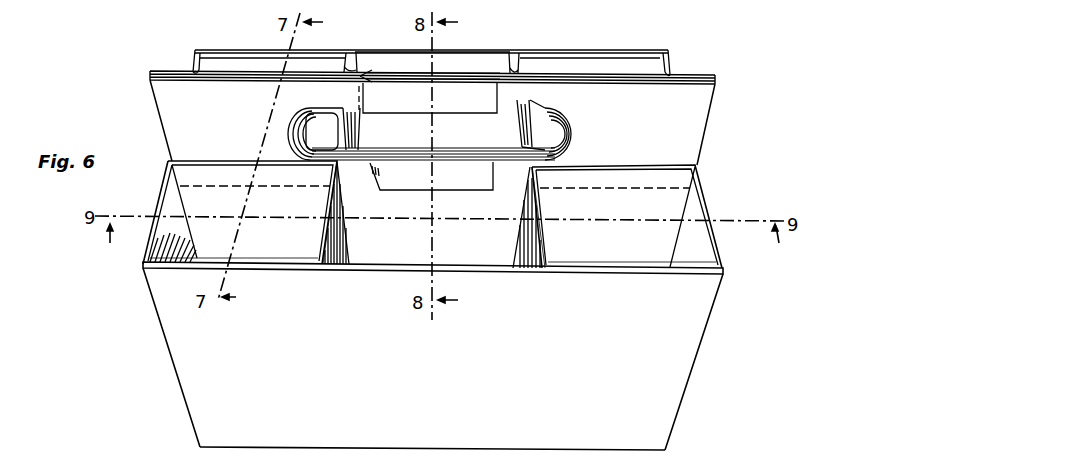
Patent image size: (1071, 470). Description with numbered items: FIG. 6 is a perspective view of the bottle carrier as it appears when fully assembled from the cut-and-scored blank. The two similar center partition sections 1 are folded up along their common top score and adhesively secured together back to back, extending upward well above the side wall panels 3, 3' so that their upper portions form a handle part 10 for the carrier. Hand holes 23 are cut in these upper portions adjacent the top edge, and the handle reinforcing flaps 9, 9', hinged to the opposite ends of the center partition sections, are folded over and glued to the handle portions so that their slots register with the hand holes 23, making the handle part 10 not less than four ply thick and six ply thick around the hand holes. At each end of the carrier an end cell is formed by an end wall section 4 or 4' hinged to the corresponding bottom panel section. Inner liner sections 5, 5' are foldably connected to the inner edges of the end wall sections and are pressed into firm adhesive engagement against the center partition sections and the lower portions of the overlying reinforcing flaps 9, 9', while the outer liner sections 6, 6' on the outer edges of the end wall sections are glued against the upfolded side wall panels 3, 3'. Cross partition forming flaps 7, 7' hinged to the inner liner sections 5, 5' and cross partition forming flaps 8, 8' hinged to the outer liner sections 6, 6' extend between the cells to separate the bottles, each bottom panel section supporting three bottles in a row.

The center partition section 1 is at (395, 247).
The side wall panel 3 is at (430, 359).
The side wall panel 3' is at (432, 37).
The end wall section 4 is at (438, 214).
The end wall section 4' is at (439, 43).
The inner liner section 5 is at (422, 200).
The inner liner section 5' is at (455, 131).
The outer liner section 6 is at (433, 252).
The outer liner section 6' is at (431, 38).
The cross partition forming flap 7 is at (433, 214).
The cross partition forming flap 7' is at (429, 120).
The cross partition forming flap 8 is at (432, 215).
The cross partition forming flap 8' is at (445, 44).
The handle reinforcing flap 9 is at (432, 148).
The handle reinforcing flap 9' is at (390, 86).
The handle part 10 is at (715, 98).
The hand hole 23 is at (557, 118).